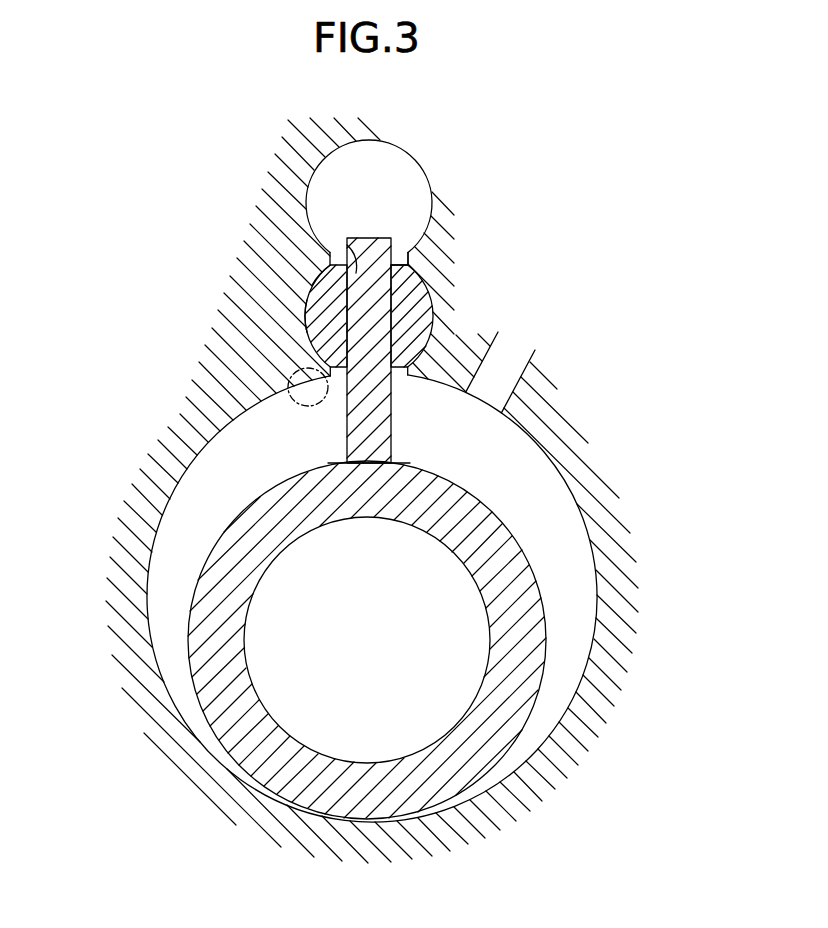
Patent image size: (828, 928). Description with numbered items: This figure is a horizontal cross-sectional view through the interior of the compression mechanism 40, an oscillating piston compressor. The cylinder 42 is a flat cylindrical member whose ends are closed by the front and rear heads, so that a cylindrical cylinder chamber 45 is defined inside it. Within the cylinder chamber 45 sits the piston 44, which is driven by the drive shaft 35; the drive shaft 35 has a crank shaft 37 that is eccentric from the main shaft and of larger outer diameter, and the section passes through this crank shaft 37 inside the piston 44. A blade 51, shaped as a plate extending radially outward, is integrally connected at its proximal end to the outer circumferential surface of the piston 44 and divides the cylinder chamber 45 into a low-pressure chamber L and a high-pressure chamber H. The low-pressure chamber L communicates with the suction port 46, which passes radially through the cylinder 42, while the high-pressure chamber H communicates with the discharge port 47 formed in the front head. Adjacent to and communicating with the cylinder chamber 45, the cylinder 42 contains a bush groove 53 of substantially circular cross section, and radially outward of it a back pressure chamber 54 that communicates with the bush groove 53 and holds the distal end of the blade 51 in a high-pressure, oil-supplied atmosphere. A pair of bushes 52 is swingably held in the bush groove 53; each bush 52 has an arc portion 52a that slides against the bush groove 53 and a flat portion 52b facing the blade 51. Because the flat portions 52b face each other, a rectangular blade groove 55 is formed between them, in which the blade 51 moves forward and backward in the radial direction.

The compression mechanism 40 is at (595, 300).
The cylinder 42 is at (112, 537).
The piston 44 is at (278, 762).
The cylinder chamber 45 is at (538, 483).
The suction port 46 is at (533, 352).
The discharge port 47 is at (306, 395).
The blade 51 is at (372, 305).
The bush 52 is at (340, 255).
The arc portion 52a is at (320, 279).
The flat portion 52b is at (340, 250).
The bush groove 53 is at (315, 297).
The back pressure chamber 54 is at (402, 193).
The blade groove 55 is at (395, 262).
The crank shaft 37 is at (362, 583).
The drive shaft 35 is at (369, 350).
The high-pressure chamber H is at (168, 612).
The low-pressure chamber L is at (583, 607).